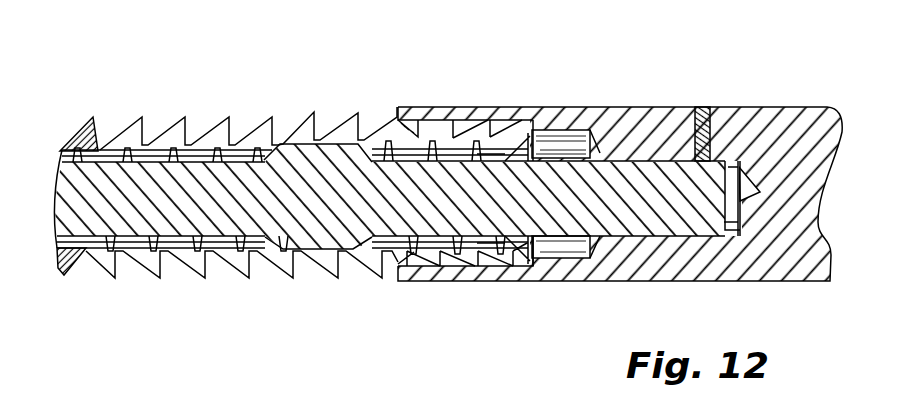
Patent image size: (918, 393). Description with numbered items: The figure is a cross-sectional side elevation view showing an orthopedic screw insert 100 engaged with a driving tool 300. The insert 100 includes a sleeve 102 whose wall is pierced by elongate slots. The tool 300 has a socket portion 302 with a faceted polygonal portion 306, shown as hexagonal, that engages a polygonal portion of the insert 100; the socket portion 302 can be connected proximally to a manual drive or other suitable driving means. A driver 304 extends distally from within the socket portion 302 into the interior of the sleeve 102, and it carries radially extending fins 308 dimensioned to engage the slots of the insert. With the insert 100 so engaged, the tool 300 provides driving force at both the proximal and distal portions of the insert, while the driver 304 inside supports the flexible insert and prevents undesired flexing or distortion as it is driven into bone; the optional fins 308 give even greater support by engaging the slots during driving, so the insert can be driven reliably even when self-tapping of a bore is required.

The insert 100 is at (389, 159).
The sleeve 102 is at (225, 136).
The tool 300 is at (612, 180).
The socket portion 302 is at (693, 89).
The driver 304 is at (178, 205).
The polygonal portion 306 is at (428, 128).
The fins 308 is at (285, 142).